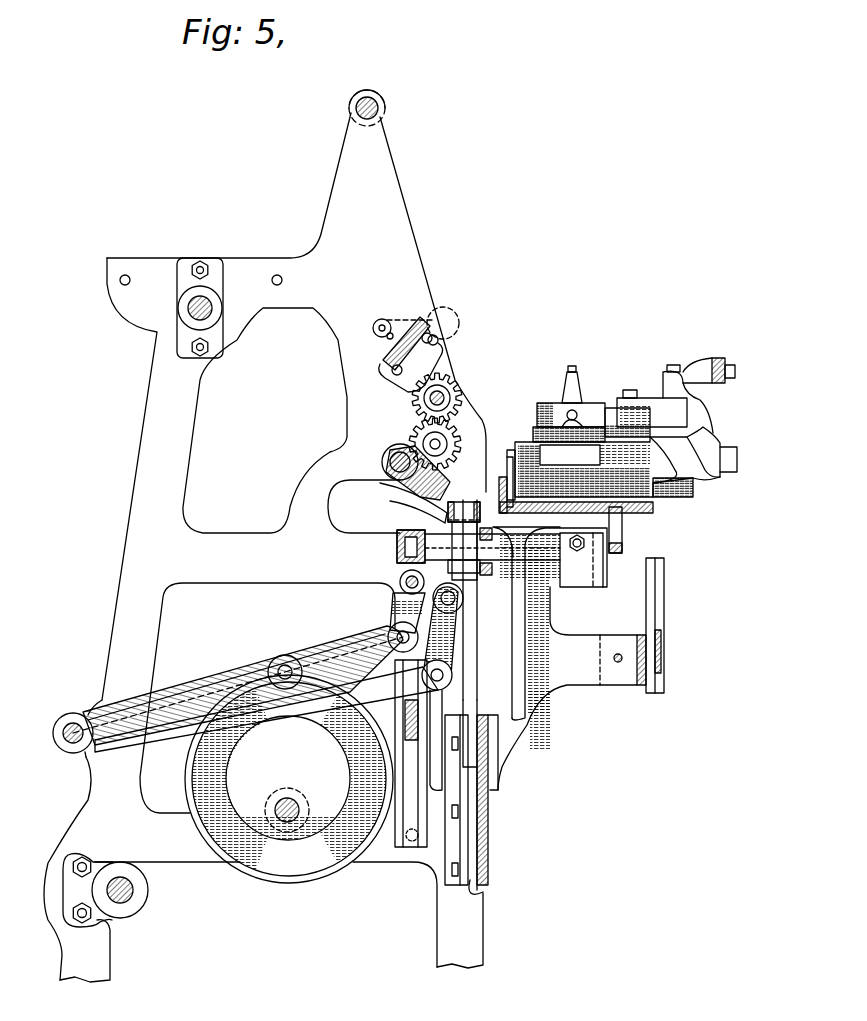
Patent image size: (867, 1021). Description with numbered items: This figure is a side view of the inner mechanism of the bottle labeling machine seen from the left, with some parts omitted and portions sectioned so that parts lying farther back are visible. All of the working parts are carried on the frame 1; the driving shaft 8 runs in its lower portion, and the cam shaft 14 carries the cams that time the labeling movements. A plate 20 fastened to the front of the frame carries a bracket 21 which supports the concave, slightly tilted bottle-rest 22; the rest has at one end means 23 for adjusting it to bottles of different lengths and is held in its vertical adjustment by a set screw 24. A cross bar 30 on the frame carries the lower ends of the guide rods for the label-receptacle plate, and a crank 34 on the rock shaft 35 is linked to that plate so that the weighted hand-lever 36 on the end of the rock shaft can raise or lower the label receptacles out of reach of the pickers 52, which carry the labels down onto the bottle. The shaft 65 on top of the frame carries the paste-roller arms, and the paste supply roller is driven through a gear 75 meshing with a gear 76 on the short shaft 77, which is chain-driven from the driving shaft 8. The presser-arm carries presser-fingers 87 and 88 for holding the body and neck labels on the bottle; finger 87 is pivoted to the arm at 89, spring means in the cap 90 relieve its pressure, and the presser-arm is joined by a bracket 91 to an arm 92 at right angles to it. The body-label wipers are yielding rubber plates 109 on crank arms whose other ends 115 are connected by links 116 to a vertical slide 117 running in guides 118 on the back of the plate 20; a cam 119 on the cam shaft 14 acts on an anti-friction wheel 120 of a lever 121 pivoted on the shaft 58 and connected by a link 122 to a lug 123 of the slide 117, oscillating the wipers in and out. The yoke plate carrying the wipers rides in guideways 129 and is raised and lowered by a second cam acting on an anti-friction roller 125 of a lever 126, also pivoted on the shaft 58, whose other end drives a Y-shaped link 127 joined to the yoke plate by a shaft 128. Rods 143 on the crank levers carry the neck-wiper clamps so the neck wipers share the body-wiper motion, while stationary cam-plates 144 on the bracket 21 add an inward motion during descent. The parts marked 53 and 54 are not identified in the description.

The frame 1 is at (152, 405).
The shaft 8 is at (130, 898).
The cam shaft 14 is at (286, 798).
The plate 20 is at (489, 812).
The bracket 21 is at (552, 617).
The bottle-rest 22 is at (660, 508).
The adjusting means 23 is at (502, 476).
The set screw 24 is at (565, 562).
The cross bar 30 is at (382, 362).
The crank 34 is at (373, 330).
The rock shaft 35 is at (389, 320).
The weighted hand-lever 36 is at (450, 317).
The pickers 52 is at (421, 493).
The arm 53 is at (402, 476).
The pivot pin 54 is at (383, 460).
The shaft 58 is at (71, 740).
The shaft 65 is at (379, 108).
The gear 75 is at (447, 392).
The gear 76 is at (450, 428).
The short shaft 77 is at (422, 438).
The presser-finger 87 is at (540, 403).
The presser-finger 88 is at (713, 433).
The pivot 89 is at (578, 410).
The cap 90 is at (578, 388).
The bracket 91 is at (688, 366).
The arm 92 is at (726, 362).
The yielding rubber plates 109 is at (557, 419).
The crank arm ends 115 is at (469, 518).
The links 116 is at (447, 518).
The vertical slide 117 is at (489, 754).
The guides 118 is at (485, 893).
The cam 119 is at (260, 878).
The anti-friction wheel 120 is at (290, 722).
The lever 121 is at (345, 715).
The link 122 is at (452, 652).
The lug 123 is at (462, 598).
The anti-friction roller 125 is at (283, 655).
The lever 126 is at (222, 672).
The Y-shaped link 127 is at (390, 610).
The shaft 128 is at (400, 580).
The guideways 129 is at (410, 810).
The rods 143 is at (694, 490).
The stationary cam-plates 144 is at (666, 600).